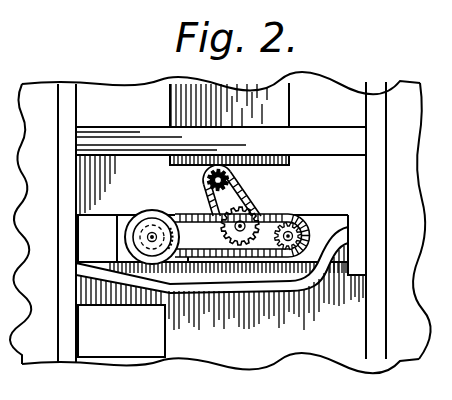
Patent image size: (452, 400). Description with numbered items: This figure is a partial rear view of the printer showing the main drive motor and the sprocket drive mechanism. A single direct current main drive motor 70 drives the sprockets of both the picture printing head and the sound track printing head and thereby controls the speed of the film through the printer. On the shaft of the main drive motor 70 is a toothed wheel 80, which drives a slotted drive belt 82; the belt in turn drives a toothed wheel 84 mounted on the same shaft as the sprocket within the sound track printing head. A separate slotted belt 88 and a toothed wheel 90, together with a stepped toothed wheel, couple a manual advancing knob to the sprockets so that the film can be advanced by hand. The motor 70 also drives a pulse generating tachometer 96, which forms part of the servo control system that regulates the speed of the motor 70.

The main drive motor 70 is at (142, 213).
The toothed wheel 80 is at (126, 238).
The slotted drive belt 82 is at (273, 216).
The toothed wheel 84 is at (308, 217).
The slotted belt 88 is at (210, 203).
The toothed wheel 90 is at (234, 180).
The pulse generating tachometer 96 is at (152, 236).